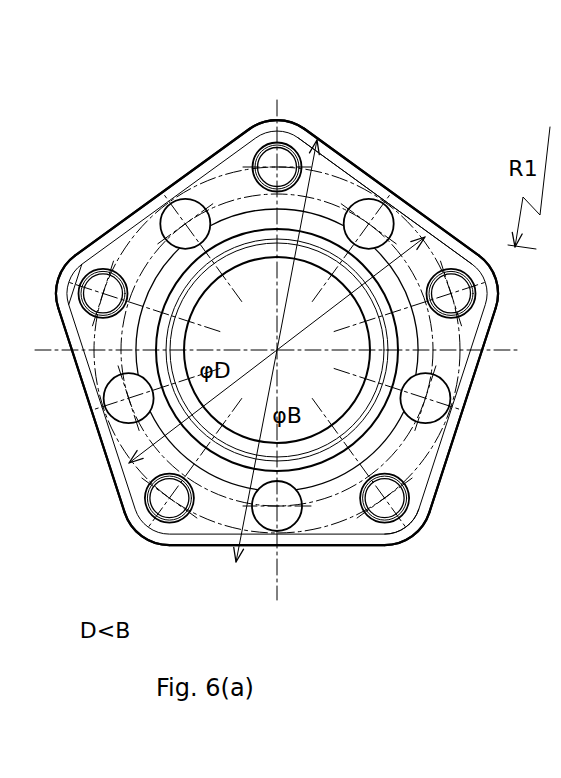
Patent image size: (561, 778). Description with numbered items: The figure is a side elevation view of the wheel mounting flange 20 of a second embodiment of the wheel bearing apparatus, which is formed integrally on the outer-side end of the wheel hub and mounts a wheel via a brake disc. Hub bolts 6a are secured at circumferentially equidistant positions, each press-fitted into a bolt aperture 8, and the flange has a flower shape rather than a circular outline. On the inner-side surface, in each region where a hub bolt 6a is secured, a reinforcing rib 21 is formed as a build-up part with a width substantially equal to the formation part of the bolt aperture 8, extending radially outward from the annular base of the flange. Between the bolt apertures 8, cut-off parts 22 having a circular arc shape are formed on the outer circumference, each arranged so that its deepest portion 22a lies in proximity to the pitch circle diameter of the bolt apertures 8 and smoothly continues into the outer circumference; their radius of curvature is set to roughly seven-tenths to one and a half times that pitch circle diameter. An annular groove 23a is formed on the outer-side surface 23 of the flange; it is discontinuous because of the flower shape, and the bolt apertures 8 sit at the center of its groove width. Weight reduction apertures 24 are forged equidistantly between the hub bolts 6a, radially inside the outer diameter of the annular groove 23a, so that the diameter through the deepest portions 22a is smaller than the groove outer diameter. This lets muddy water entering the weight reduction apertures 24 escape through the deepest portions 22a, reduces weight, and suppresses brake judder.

The wheel mounting flange 20 is at (286, 119).
The reinforcing rib 21 is at (266, 315).
The cut-off part 22 is at (280, 370).
The deepest portion 22a is at (244, 297).
The outer-side surface 23 is at (212, 168).
The annular groove 23a is at (440, 448).
The weight reduction aperture 24 is at (279, 366).
The bolt aperture 8 is at (279, 311).
The hub bolt 6a is at (303, 340).